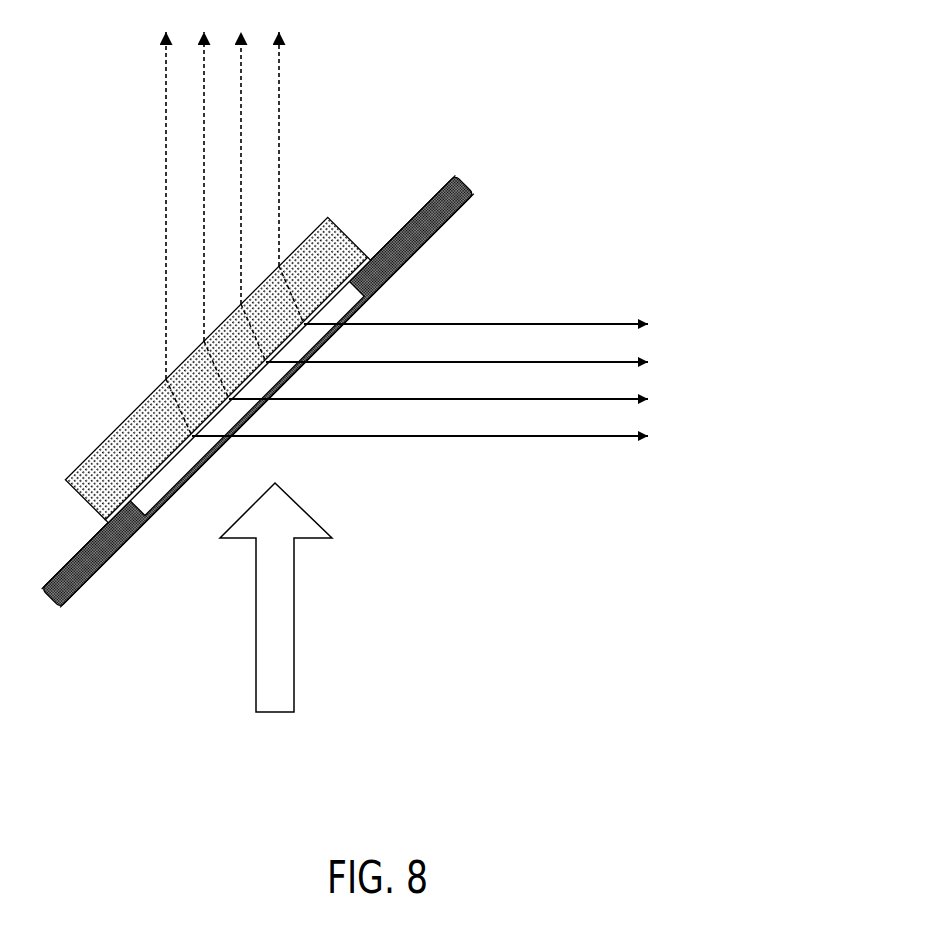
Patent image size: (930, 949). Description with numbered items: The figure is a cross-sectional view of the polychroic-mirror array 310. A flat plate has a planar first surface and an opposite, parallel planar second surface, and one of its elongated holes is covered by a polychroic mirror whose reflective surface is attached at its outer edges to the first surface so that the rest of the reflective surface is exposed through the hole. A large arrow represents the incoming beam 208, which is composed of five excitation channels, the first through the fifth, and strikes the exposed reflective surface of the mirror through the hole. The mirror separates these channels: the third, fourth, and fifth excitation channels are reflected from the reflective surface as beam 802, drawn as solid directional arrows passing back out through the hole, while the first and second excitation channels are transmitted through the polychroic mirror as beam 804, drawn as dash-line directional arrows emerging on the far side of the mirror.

The beam 208 is at (286, 633).
The polychroic-mirror array 310 is at (298, 327).
The beam 802 is at (607, 301).
The beam 804 is at (140, 231).